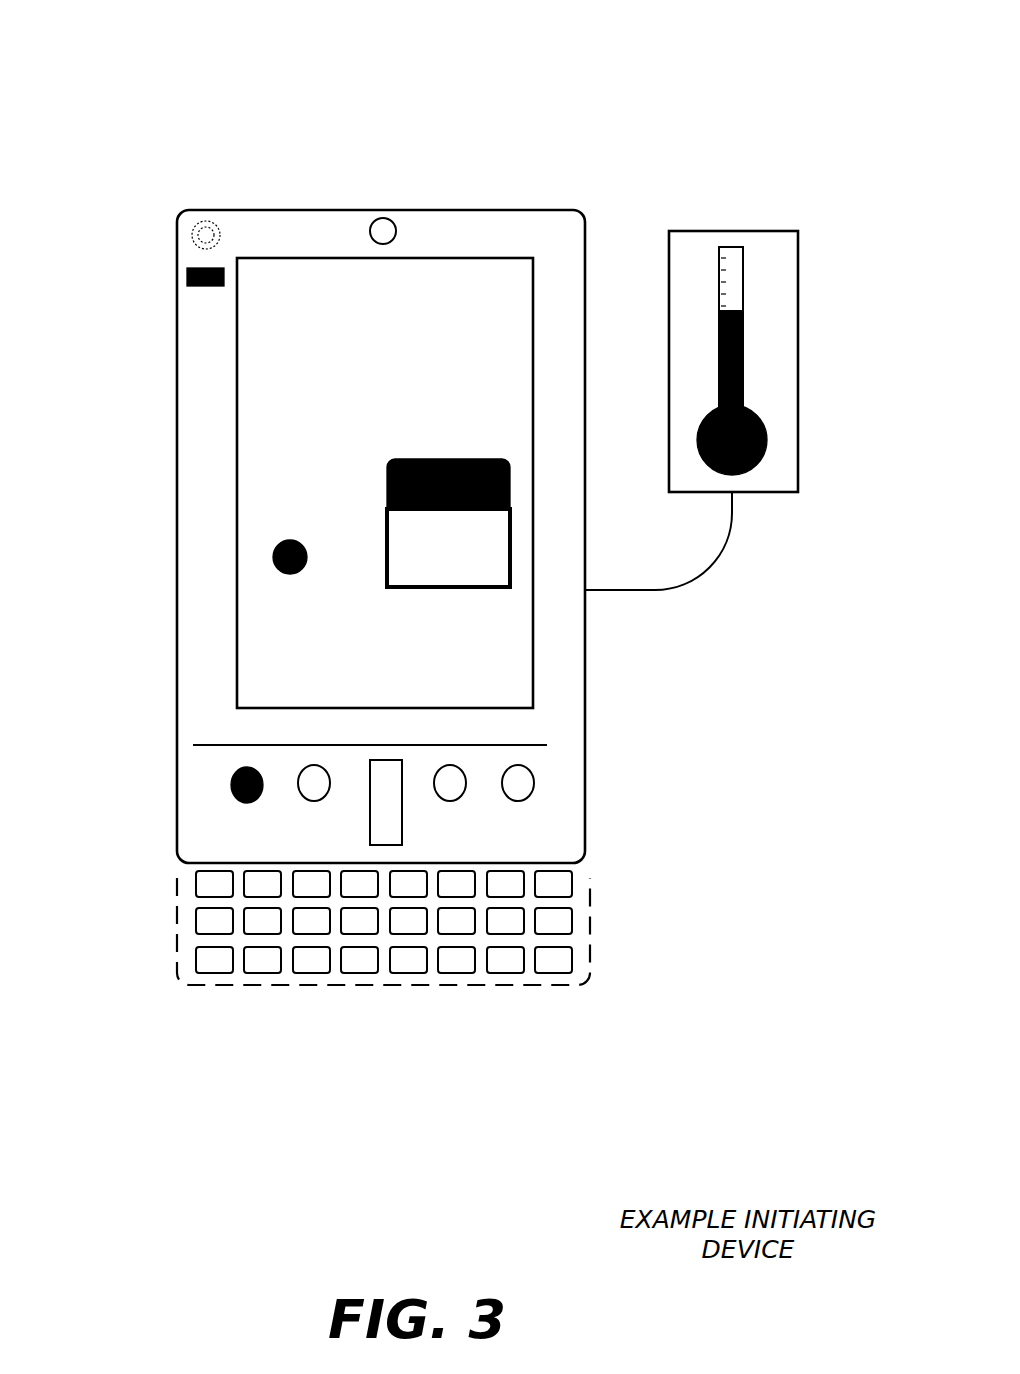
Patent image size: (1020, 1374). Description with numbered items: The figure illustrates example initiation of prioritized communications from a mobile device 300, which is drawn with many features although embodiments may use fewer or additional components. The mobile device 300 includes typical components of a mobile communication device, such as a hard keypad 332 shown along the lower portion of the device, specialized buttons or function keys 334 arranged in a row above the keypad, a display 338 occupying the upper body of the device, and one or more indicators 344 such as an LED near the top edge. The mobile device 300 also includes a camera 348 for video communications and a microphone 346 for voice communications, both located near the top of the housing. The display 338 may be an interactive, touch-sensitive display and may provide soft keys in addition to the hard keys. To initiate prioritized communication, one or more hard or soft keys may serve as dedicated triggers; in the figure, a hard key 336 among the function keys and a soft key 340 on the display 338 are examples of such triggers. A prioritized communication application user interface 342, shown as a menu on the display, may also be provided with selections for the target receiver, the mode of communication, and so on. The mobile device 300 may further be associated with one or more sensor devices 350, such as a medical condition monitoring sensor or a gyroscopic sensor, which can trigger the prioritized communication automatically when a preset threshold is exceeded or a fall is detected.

The mobile device 300 is at (727, 53).
The hard keypad 332 is at (177, 953).
The specialized buttons 334 is at (517, 800).
The hard key 336 is at (232, 783).
The display 338 is at (260, 643).
The soft key 340 is at (273, 553).
The prioritized communication application user interface 342 is at (388, 483).
The indicator 344 is at (187, 277).
The microphone 346 is at (194, 236).
The camera 348 is at (394, 222).
The thermometer/sensor 350 is at (730, 231).